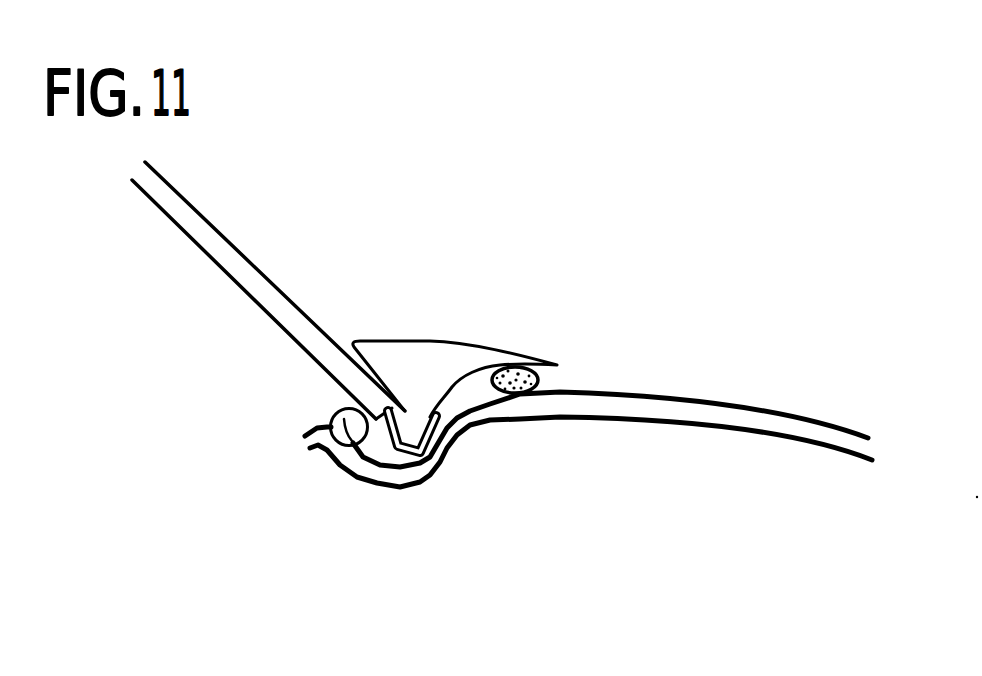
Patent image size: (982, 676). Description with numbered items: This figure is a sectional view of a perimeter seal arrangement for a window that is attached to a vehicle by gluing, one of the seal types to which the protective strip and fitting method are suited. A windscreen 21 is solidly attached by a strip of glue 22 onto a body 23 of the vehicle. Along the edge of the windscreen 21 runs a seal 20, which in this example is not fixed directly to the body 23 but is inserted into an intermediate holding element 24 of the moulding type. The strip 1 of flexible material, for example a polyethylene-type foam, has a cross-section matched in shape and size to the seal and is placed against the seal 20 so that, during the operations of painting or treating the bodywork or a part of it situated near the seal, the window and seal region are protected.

The strip 1 is at (527, 393).
The seal 20 is at (433, 326).
The windscreen 21 is at (227, 263).
The strip of glue 22 is at (345, 457).
The body 23 is at (725, 413).
The intermediate holding element 24 is at (430, 466).